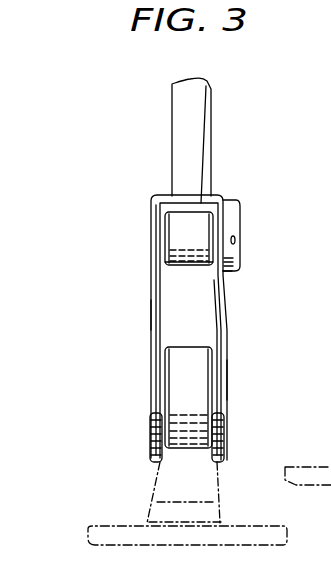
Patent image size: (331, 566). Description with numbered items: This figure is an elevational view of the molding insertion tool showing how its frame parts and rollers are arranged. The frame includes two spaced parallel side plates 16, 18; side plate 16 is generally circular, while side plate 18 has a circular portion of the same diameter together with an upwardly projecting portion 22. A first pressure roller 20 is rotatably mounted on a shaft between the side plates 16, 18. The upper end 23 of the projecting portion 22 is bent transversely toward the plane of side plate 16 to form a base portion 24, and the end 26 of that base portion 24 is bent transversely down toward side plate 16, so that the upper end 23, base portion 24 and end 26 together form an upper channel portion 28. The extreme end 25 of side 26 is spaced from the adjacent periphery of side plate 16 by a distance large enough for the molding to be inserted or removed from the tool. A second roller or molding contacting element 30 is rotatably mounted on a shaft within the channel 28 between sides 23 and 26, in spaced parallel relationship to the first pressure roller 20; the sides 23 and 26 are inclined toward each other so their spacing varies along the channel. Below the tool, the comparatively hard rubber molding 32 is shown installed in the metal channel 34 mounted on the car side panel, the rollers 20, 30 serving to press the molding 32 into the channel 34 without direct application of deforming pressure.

The side plate 16 is at (225, 384).
The side plate 18 is at (152, 404).
The first pressure roller 20 is at (178, 378).
The upwardly projecting portion 22 is at (151, 324).
The upper end 23 is at (147, 243).
The base portion 24 is at (199, 196).
The extreme end 25 is at (226, 272).
The end of the base portion 26 is at (235, 215).
The upper channel portion 28 is at (147, 192).
The second roller 30 is at (175, 266).
The rubber molding 32 is at (168, 475).
The metal channel 34 is at (222, 518).